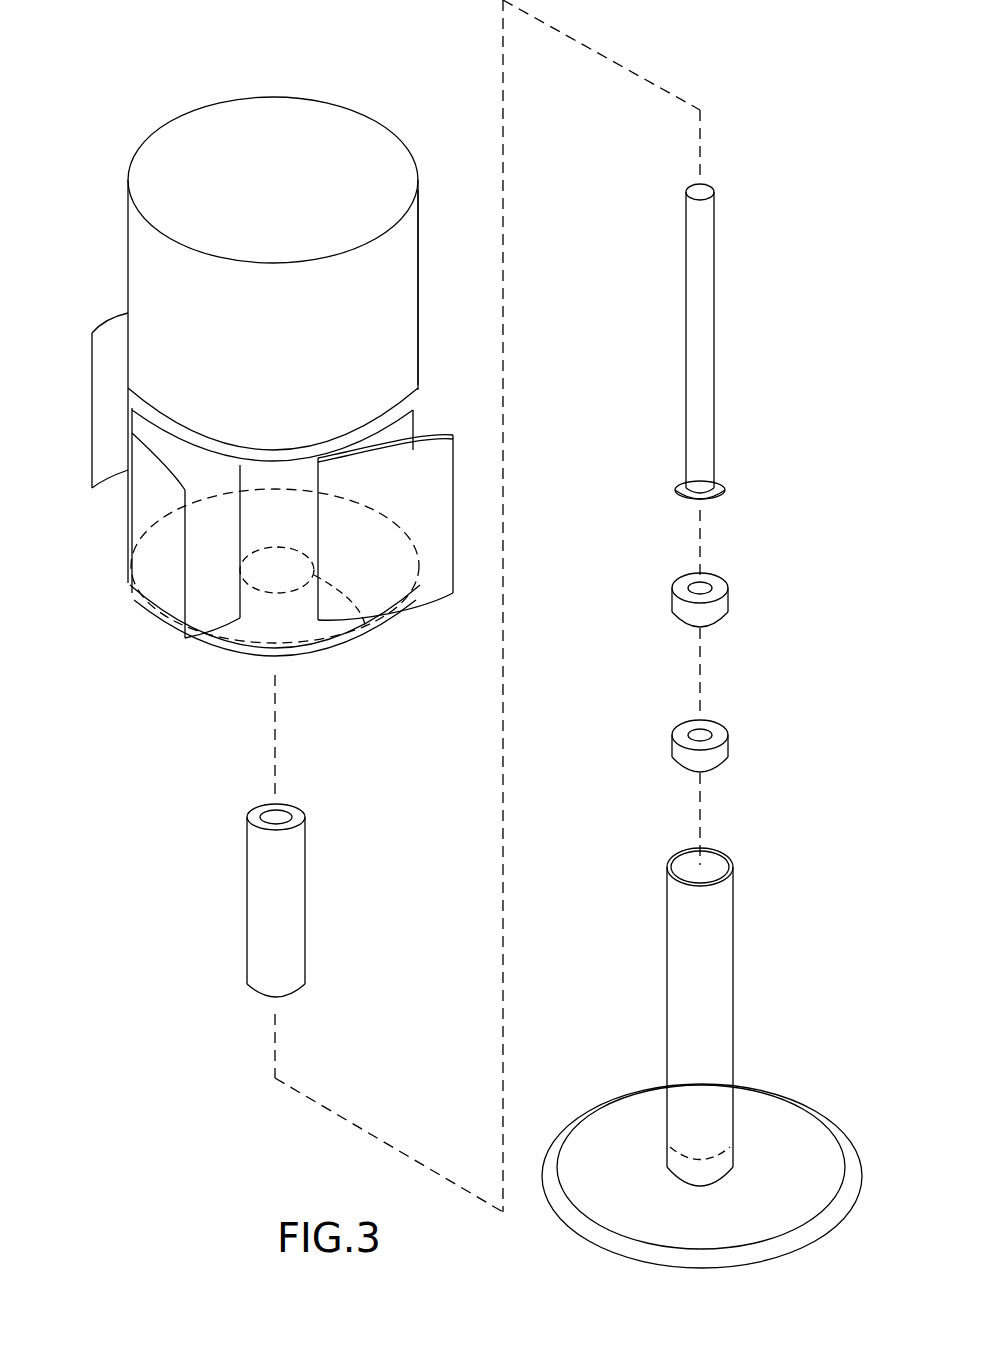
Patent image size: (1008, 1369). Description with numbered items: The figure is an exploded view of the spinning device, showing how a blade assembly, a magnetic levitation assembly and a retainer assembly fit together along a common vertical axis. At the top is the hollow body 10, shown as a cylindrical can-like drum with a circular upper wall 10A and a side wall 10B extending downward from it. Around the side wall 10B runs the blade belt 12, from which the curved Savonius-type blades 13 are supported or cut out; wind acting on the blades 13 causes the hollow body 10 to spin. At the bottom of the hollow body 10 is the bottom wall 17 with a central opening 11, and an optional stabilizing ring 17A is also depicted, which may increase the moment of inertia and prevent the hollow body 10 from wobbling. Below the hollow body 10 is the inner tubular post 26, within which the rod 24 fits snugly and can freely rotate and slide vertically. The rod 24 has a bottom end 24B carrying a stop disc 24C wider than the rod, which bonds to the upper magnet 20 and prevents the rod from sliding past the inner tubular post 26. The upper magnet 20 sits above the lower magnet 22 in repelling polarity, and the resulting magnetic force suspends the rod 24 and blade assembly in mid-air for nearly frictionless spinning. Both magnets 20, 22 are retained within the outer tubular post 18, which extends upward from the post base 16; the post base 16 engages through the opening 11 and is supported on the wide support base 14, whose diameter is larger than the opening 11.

The hollow body 10 is at (140, 268).
The upper wall 10A is at (213, 123).
The side wall 10B is at (413, 223).
The blade belt 12 is at (298, 457).
The blades 13 is at (155, 603).
The opening 11 is at (365, 625).
The bottom wall 17 is at (410, 600).
The stabilizing ring 17A is at (372, 542).
The inner tubular post 26 is at (254, 902).
The rod 24 is at (703, 325).
The bottom end of rod 24B is at (683, 475).
The stop disc 24C is at (718, 507).
The upper magnet 20 is at (678, 610).
The lower magnet 22 is at (720, 732).
The outer tubular post 18 is at (683, 1002).
The post base 16 is at (693, 1158).
The support base 14 is at (788, 1113).